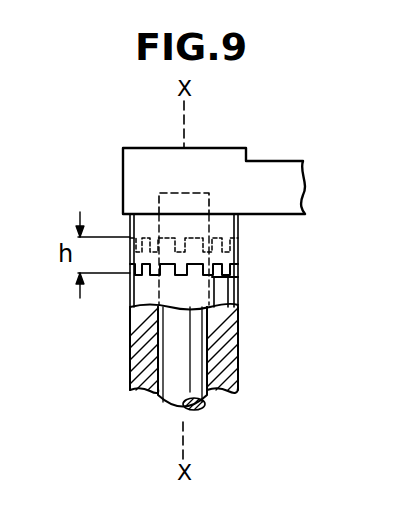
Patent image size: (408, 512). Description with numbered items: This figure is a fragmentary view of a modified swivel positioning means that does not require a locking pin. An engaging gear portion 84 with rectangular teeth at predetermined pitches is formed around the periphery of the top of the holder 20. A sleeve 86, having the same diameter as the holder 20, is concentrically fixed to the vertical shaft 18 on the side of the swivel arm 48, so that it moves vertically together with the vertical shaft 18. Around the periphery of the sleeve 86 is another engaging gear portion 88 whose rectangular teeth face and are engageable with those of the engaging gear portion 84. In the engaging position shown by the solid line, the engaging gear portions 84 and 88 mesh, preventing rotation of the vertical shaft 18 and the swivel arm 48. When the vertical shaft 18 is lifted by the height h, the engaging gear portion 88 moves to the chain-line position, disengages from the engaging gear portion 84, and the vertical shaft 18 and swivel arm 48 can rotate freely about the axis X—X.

The swivel arm 48 is at (283, 168).
The engaging gear portion 84 is at (166, 272).
The sleeve 86 is at (237, 229).
The engaging gear portion 88 is at (237, 252).
The holder 20 is at (140, 358).
The vertical shaft 18 is at (195, 374).